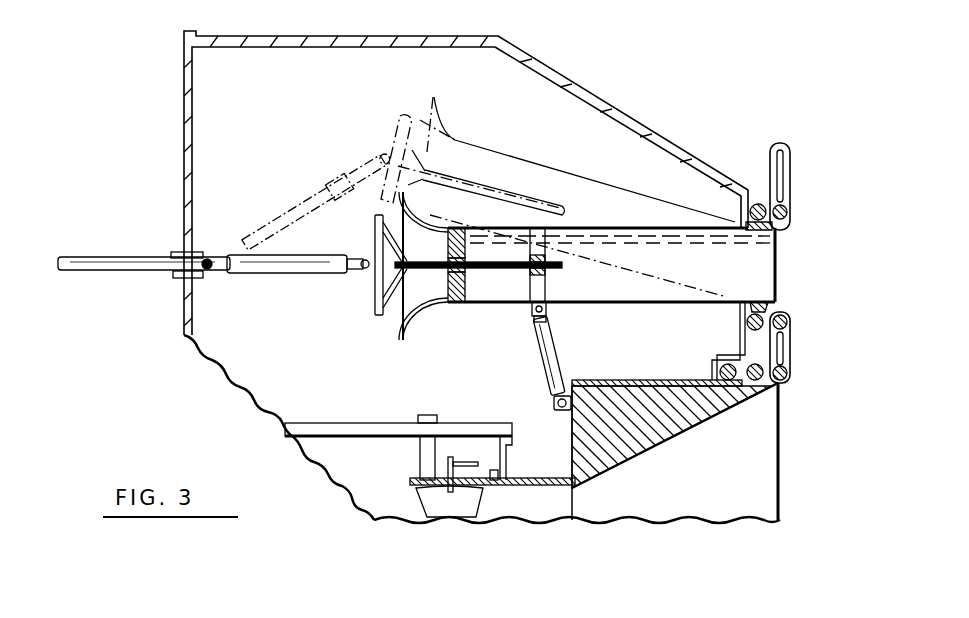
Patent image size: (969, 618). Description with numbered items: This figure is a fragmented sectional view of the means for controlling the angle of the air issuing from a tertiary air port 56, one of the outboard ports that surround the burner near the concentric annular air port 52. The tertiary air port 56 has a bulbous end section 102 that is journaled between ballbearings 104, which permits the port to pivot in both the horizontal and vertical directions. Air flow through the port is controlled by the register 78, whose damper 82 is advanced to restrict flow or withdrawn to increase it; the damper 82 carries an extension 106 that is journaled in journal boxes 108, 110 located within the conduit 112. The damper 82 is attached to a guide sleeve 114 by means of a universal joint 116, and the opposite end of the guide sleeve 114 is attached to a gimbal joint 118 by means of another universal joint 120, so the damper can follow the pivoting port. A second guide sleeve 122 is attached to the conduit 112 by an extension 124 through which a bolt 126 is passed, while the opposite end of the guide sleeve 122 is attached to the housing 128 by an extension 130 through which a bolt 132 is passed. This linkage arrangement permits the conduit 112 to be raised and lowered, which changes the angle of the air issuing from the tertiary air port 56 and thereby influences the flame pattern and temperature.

The concentric annular air port 52 is at (574, 501).
The tertiary air port 56 is at (750, 263).
The register 78 is at (350, 236).
The damper 82 is at (398, 145).
The bulbous end section 102 is at (778, 229).
The ballbearings 104 is at (766, 211).
The extension 106 is at (478, 262).
The journal box 108 is at (547, 272).
The journal box 110 is at (478, 262).
The conduit 112 is at (698, 275).
The guide sleeve 114 is at (276, 273).
The universal joint 116 is at (374, 296).
The gimbal joint 118 is at (207, 256).
The universal joint 120 is at (210, 271).
The guide sleeve 122 is at (557, 373).
The extension 124 is at (545, 311).
The bolt 126 is at (534, 320).
The housing 128 is at (573, 384).
The extension 130 is at (561, 413).
The bolt 132 is at (554, 404).